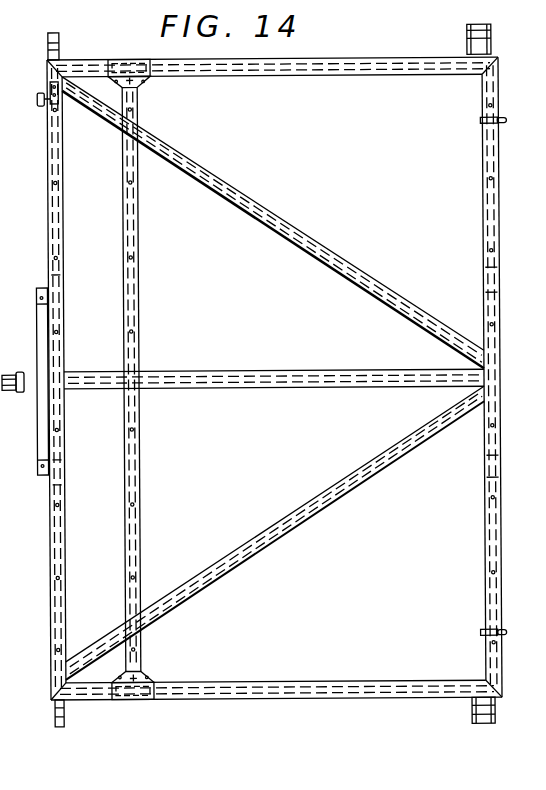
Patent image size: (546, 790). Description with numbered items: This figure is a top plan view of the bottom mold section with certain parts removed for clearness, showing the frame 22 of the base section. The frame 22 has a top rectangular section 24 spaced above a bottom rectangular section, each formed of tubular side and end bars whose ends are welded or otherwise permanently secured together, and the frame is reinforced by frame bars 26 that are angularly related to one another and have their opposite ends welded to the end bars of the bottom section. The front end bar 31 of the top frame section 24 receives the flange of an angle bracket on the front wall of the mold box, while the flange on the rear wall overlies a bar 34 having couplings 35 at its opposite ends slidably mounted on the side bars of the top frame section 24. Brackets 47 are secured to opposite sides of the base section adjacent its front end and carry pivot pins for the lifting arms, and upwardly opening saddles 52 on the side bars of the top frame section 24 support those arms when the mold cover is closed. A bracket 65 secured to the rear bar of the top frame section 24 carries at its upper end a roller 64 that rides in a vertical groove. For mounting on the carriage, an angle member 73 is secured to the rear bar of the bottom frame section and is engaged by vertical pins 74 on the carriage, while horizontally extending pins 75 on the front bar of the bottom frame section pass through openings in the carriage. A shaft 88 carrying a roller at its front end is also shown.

The frame 22 is at (100, 705).
The top rectangular section 24 is at (293, 682).
The frame bars 26 is at (337, 272).
The front end bar 31 is at (486, 423).
The bar 34 is at (138, 330).
The couplings 35 is at (120, 58).
The brackets 47 is at (57, 34).
The saddles 52 is at (467, 42).
The roller 64 is at (37, 100).
The bracket 65 is at (60, 110).
The angle member 73 is at (45, 283).
The vertical pins 74 is at (38, 297).
The pins 75 is at (481, 124).
The shaft 88 is at (3, 373).